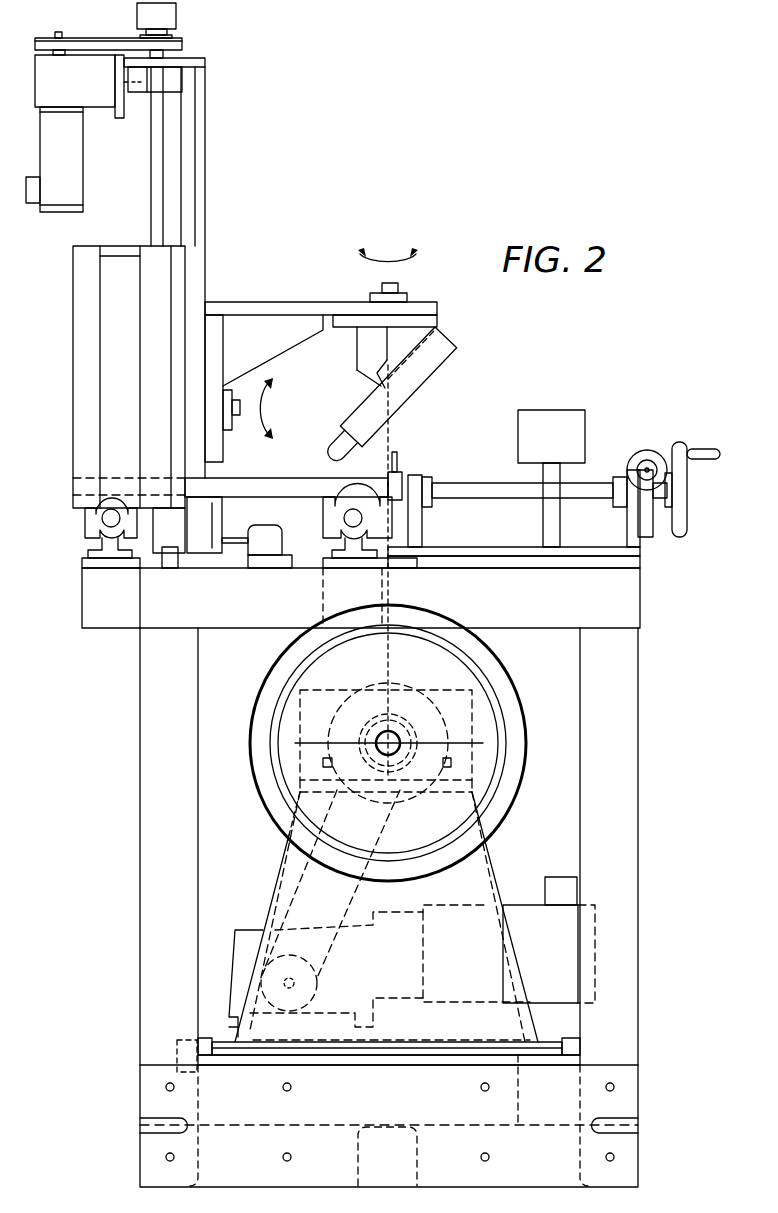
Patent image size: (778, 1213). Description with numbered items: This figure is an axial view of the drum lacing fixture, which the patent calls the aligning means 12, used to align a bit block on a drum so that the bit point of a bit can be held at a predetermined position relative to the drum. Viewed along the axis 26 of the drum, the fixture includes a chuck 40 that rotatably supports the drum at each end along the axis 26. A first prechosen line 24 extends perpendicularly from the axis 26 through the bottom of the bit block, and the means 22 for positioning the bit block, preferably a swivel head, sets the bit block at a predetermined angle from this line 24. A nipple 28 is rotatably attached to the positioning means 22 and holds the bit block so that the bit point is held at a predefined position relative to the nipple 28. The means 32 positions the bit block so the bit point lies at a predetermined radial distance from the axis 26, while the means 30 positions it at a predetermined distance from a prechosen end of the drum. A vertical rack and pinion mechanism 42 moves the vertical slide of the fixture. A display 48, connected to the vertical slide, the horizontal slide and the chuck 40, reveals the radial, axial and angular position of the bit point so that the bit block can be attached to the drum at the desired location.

The aligning means 12 is at (398, 197).
The means for positioning the bit block at a predetermined angle 22 is at (284, 302).
The first prechosen line 24 is at (393, 582).
The axis of the drum 26 is at (393, 742).
The nipple 28 is at (443, 360).
The means for positioning the bit block at a predetermined distance from a prechosen 30 is at (85, 522).
The means for positioning the bit block at a predetermined distance from the axis 32 is at (73, 280).
The chuck 40 is at (487, 853).
The vertical rack and pinion mechanism 42 is at (205, 118).
The display 48 is at (573, 410).